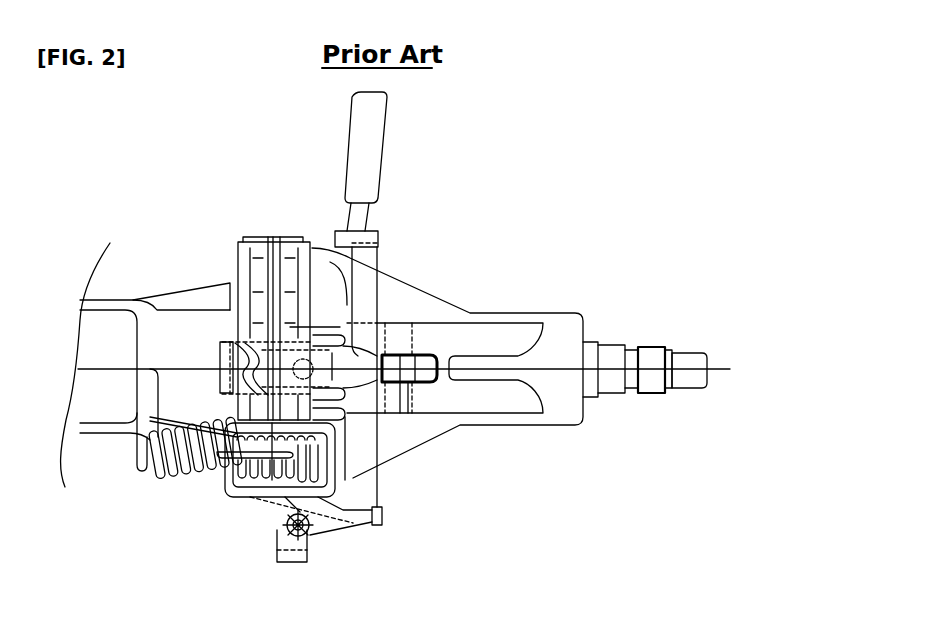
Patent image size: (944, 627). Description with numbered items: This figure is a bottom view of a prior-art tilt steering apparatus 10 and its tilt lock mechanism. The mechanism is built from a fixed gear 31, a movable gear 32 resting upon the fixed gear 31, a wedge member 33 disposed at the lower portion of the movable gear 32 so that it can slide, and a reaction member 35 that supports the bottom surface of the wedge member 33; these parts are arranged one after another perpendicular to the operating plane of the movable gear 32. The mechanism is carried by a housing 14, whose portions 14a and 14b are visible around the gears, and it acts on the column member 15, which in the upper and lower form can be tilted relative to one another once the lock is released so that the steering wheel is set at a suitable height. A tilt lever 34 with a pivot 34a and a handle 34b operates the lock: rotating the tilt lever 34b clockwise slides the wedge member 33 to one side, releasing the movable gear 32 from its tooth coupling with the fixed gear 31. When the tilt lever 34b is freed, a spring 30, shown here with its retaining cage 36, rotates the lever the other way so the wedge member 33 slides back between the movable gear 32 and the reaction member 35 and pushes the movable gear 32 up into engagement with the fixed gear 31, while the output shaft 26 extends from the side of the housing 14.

The shift device (prior art) 10 is at (428, 143).
The housing 14 is at (421, 291).
The housing bore portion 14a is at (447, 330).
The housing wall portion 14b is at (420, 323).
The column member 15 is at (152, 298).
The output shaft 26 is at (392, 422).
The spring 30 is at (168, 462).
The fixed gear 31 is at (232, 342).
The movable gear 32 is at (220, 357).
The wedge member 33 is at (325, 345).
The shift lever 34 is at (372, 286).
The lever pivot 34a is at (308, 541).
The tilt lever 34b is at (370, 180).
The reaction member 35 is at (292, 329).
The detent cage 36 is at (240, 497).